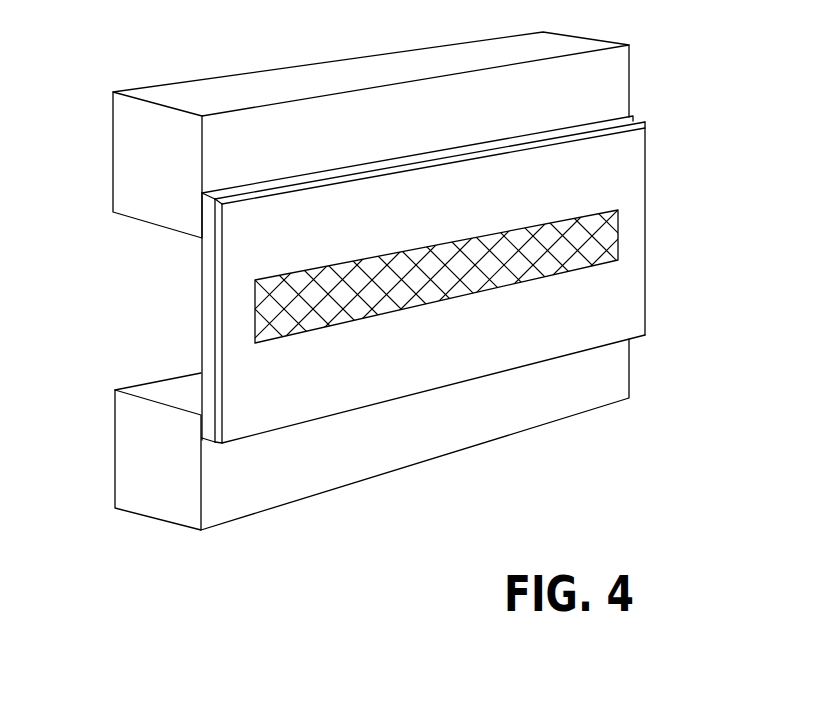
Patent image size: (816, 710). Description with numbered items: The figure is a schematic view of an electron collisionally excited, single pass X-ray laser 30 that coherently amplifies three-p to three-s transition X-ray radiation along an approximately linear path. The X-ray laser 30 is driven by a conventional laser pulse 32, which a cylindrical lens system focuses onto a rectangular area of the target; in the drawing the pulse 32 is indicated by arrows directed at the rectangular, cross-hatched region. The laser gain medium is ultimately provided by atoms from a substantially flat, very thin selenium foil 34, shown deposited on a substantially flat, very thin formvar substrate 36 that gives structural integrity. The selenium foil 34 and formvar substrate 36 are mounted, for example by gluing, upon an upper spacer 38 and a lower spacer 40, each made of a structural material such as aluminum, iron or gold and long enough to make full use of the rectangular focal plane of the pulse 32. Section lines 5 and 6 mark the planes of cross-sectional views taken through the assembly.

The X-ray laser 30 is at (538, 468).
The conventional laser pulse 32 is at (258, 278).
The thin foil 34 is at (218, 287).
The thin substrate 36 is at (208, 252).
The upper spacer 38 is at (127, 165).
The lower spacer 40 is at (150, 500).
The section line 5- 5 is at (280, 396).
The section line 6- 6 is at (192, 24).